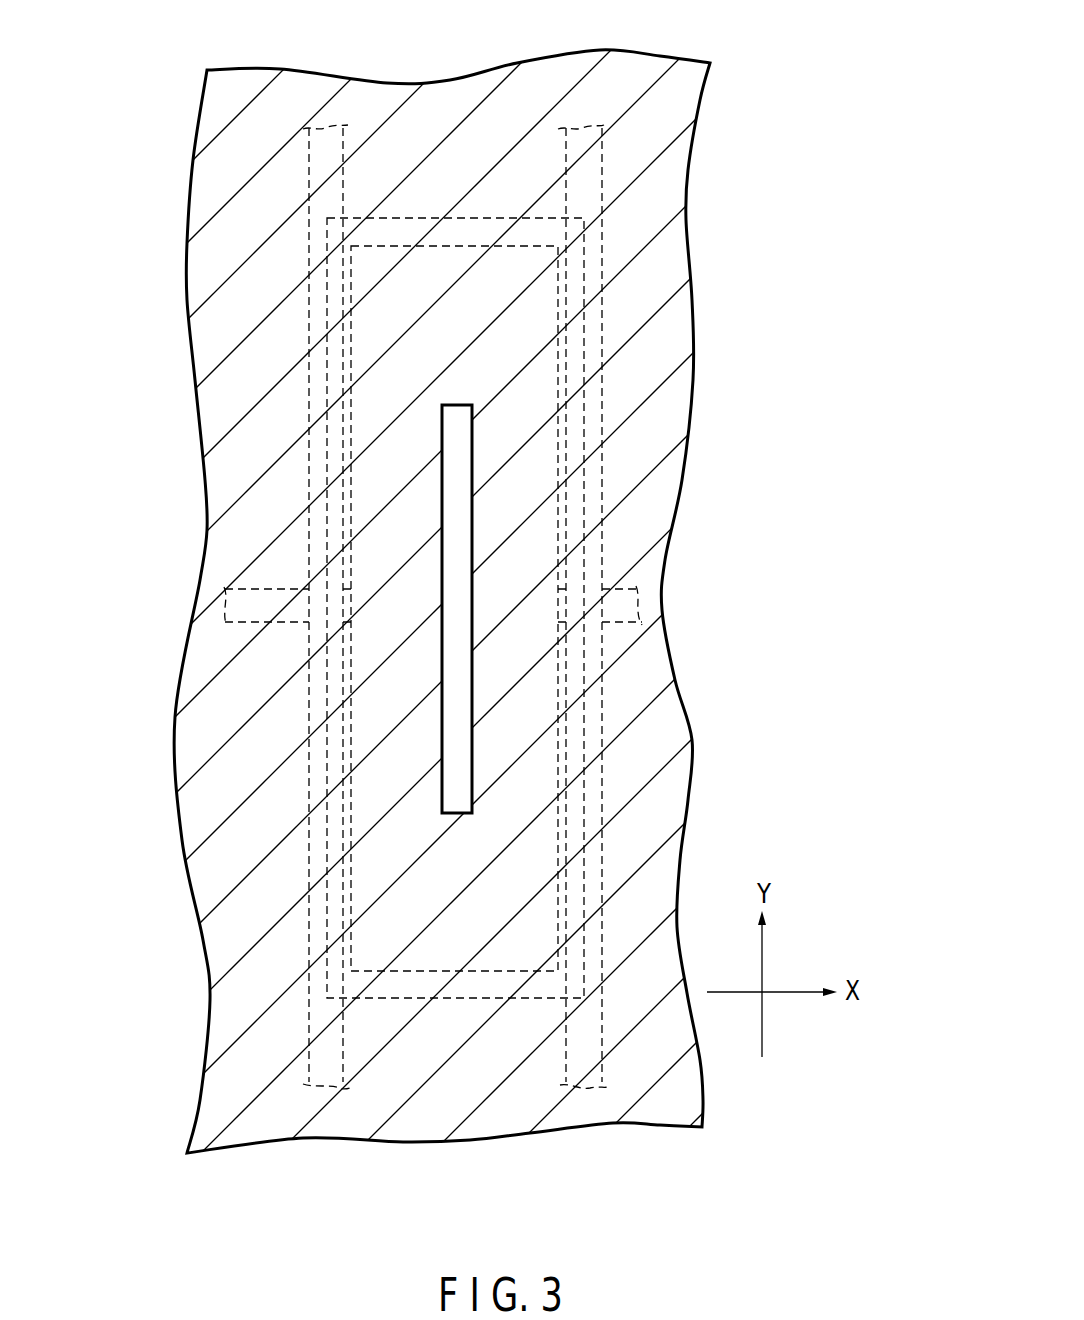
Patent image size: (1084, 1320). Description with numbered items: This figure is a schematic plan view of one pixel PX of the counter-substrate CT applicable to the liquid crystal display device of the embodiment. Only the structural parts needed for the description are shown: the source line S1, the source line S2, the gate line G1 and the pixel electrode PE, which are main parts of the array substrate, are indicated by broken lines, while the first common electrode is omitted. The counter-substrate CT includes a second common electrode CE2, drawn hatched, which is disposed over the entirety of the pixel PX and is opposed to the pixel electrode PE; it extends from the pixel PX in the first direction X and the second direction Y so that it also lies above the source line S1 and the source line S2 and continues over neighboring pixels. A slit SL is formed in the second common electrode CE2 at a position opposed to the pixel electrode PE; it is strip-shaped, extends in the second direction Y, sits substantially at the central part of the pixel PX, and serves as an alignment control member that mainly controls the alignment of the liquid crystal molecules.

The counter-substrate CT is at (737, 140).
The second common electrode CE2 is at (447, 1140).
The slit SL is at (473, 690).
The source line S1 is at (321, 127).
The source line S2 is at (585, 127).
The pixel PX is at (592, 208).
The pixel electrode PE is at (572, 338).
The gate line G1 is at (225, 605).